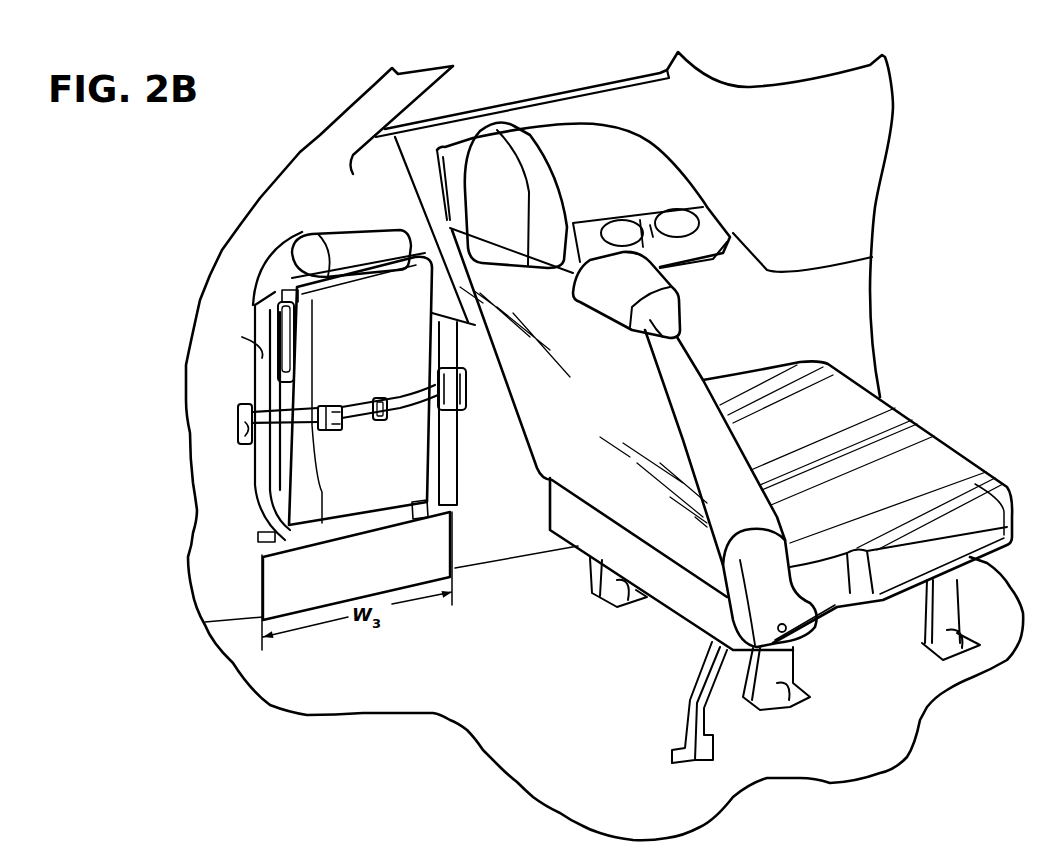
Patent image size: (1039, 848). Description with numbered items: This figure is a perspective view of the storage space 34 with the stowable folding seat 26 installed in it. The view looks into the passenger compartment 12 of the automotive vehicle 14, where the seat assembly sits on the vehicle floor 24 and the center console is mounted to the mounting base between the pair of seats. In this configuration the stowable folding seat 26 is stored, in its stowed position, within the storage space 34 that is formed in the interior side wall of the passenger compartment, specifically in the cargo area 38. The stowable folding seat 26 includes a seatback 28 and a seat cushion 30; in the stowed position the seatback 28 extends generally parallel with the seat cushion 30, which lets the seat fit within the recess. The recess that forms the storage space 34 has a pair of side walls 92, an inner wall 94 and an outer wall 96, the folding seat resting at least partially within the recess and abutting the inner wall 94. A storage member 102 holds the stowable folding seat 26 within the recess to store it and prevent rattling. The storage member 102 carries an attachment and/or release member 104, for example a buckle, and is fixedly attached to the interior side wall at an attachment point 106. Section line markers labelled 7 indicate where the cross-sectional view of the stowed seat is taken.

The passenger compartment 12 is at (909, 311).
The automotive vehicle 14 is at (516, 86).
The vehicle floor 24 is at (604, 446).
The stowable folding seat 26 is at (357, 217).
The seatback 28 is at (360, 391).
The seat cushion 30 is at (243, 338).
The storage space 34 is at (243, 553).
The cargo area 38 is at (404, 663).
The side walls 92 is at (262, 378).
The inner wall 94 is at (278, 270).
The outer wall 96 is at (356, 566).
The storage member 102 is at (240, 415).
The attachment and/or release member 104 is at (350, 422).
The attachment point 106 is at (240, 433).
The section line 7 is at (340, 219).